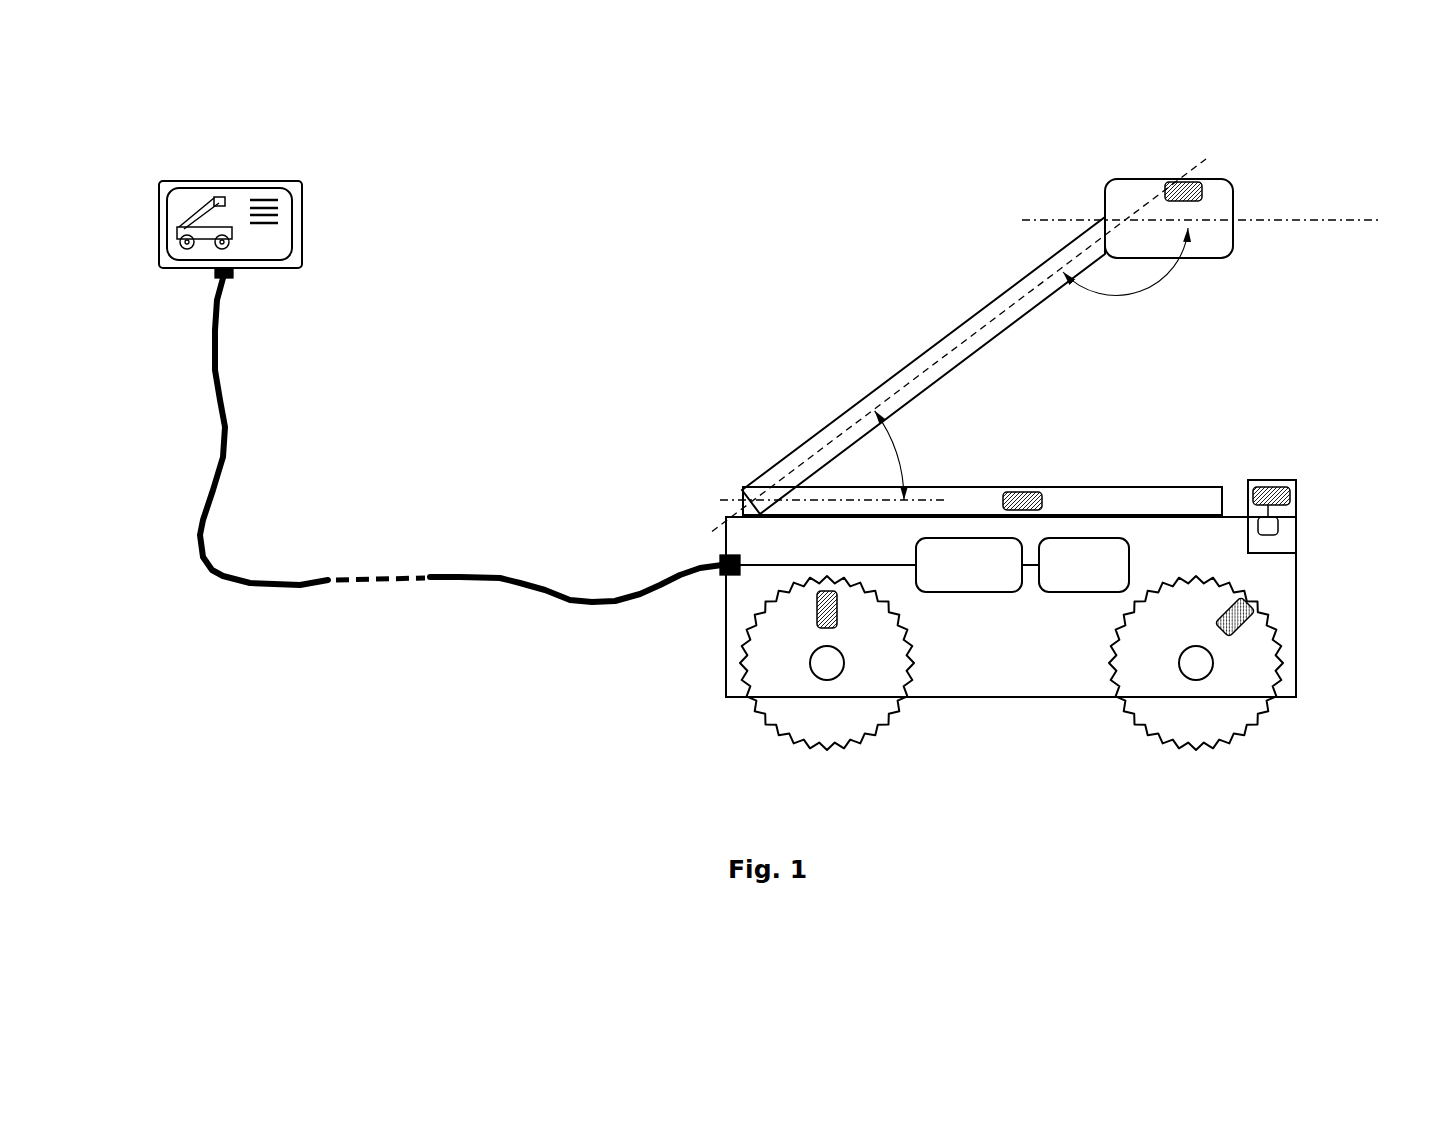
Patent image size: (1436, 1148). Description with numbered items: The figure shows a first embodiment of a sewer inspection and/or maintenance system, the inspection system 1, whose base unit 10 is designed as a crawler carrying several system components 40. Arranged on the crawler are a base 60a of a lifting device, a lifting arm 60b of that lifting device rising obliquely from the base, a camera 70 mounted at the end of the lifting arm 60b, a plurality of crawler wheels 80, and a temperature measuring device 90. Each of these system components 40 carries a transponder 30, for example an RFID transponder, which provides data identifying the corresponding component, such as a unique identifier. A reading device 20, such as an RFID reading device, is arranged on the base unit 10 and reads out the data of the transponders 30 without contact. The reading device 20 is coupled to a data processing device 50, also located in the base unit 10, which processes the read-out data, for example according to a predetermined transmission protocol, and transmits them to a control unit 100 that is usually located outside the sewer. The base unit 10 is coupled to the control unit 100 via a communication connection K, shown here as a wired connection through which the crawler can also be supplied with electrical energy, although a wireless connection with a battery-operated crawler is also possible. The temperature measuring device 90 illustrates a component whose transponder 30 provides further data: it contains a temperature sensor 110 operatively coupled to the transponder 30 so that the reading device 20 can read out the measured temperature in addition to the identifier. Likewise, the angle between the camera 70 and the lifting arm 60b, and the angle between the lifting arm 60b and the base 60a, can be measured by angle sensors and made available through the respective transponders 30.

The inspection system 1 is at (662, 173).
The base unit 10 is at (1298, 572).
The reading device 20 is at (1084, 565).
The transponder 30 is at (1203, 182).
The system components 40 is at (1061, 484).
The data processing device 50 is at (969, 565).
The base of the lifting device 60a is at (1162, 485).
The lifting arm 60b is at (928, 349).
The camera 70 is at (1224, 250).
The crawler wheels 80 is at (881, 725).
The temperature measuring device 90 is at (1300, 478).
The control unit 100 is at (305, 272).
The temperature sensor 110 is at (1278, 523).
The communication connection K is at (636, 587).